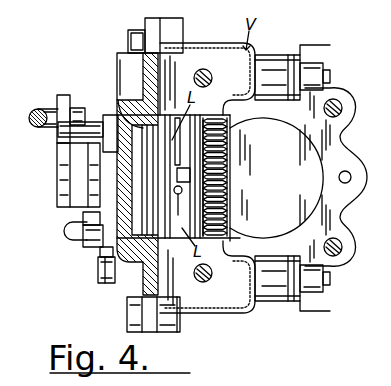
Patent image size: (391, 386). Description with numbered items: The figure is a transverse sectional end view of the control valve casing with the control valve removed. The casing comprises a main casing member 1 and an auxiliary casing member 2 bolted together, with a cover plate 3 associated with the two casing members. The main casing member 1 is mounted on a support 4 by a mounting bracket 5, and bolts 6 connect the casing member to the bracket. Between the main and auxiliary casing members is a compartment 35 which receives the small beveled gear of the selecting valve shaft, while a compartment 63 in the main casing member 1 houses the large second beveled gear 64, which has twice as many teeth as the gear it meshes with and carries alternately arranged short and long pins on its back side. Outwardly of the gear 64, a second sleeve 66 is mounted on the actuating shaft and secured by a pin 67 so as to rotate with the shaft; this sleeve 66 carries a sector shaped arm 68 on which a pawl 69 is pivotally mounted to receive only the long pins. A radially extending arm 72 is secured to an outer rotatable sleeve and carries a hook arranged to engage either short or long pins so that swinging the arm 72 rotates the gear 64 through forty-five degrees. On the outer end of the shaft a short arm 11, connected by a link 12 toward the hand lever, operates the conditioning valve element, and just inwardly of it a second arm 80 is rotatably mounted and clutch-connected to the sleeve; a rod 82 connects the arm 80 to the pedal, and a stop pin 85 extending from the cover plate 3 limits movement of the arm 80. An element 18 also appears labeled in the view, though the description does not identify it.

The main casing member 1 is at (202, 43).
The auxiliary casing member 2 is at (352, 110).
The cover plate 3 is at (147, 23).
The support 4 is at (316, 47).
The mounting bracket 5 is at (291, 55).
The bolts 6 is at (314, 74).
The short arm 11 is at (70, 96).
The link 12 is at (42, 112).
The shaft 18 is at (79, 135).
The compartment 35 is at (304, 159).
The compartment 63 is at (120, 121).
The second beveled gear 64 is at (229, 219).
The second sleeve 66 is at (172, 198).
The pin 67 is at (180, 195).
The sector shaped arm 68 is at (121, 110).
The pawl 69 is at (197, 122).
The radially extending arm 72 is at (143, 110).
The second arm 80 is at (90, 171).
The rod 82 is at (75, 234).
The stop pin 85 is at (85, 220).